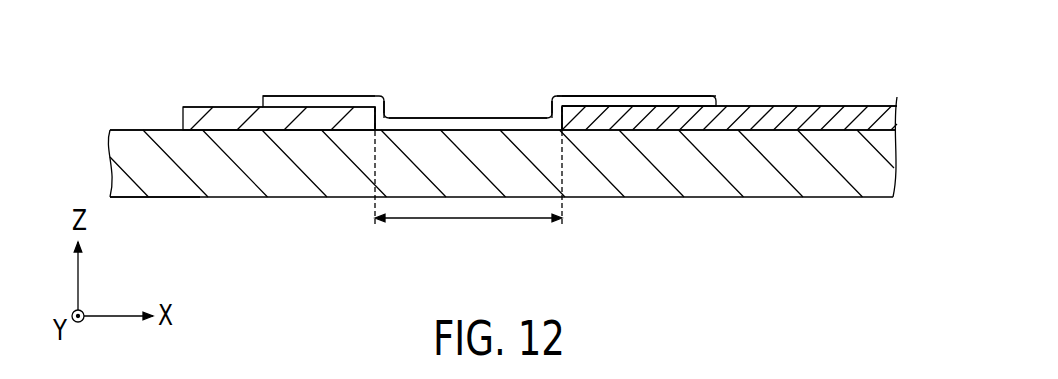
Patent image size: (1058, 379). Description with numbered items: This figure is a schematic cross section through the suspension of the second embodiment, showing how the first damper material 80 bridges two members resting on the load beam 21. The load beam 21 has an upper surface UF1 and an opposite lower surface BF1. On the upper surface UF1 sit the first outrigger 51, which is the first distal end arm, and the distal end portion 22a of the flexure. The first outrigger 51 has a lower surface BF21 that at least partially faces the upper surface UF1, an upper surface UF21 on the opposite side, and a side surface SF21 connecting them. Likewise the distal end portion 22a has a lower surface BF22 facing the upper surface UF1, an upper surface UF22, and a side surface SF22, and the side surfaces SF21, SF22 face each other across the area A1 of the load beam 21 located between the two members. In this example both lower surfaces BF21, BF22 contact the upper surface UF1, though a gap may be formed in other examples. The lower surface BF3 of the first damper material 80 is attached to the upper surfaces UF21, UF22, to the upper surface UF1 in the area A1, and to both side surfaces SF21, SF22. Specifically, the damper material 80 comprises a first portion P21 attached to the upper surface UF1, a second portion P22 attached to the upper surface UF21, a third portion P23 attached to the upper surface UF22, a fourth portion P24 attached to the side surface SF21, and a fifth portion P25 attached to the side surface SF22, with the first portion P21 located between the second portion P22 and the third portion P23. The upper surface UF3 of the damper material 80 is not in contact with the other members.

The load beam 21 is at (116, 120).
The upper surface of the load beam UF1 is at (125, 130).
The bottom face of substrate 21 BF1 is at (140, 197).
The first outrigger 51 is at (200, 90).
The upper surface of the first outrigger UF21 is at (220, 107).
The lower surface of the first outrigger BF21 is at (255, 130).
The distal end portion 22a is at (872, 92).
The upper surface of the distal end portion UF22 is at (795, 106).
The lower surface of the distal end portion BF22 is at (825, 130).
The first damper material 80 is at (578, 77).
The upper surface of the first damper material UF3 is at (668, 96).
The lower surface of the first damper material BF3 is at (700, 100).
The first portion P21 is at (467, 124).
The second portion P22 is at (328, 96).
The third portion P23 is at (626, 94).
The fourth portion P24 is at (384, 114).
The fifth portion P25 is at (552, 114).
The side surface of the first outrigger SF21 is at (384, 113).
The side surface of the distal end portion SF22 is at (552, 113).
The area A1 is at (468, 181).